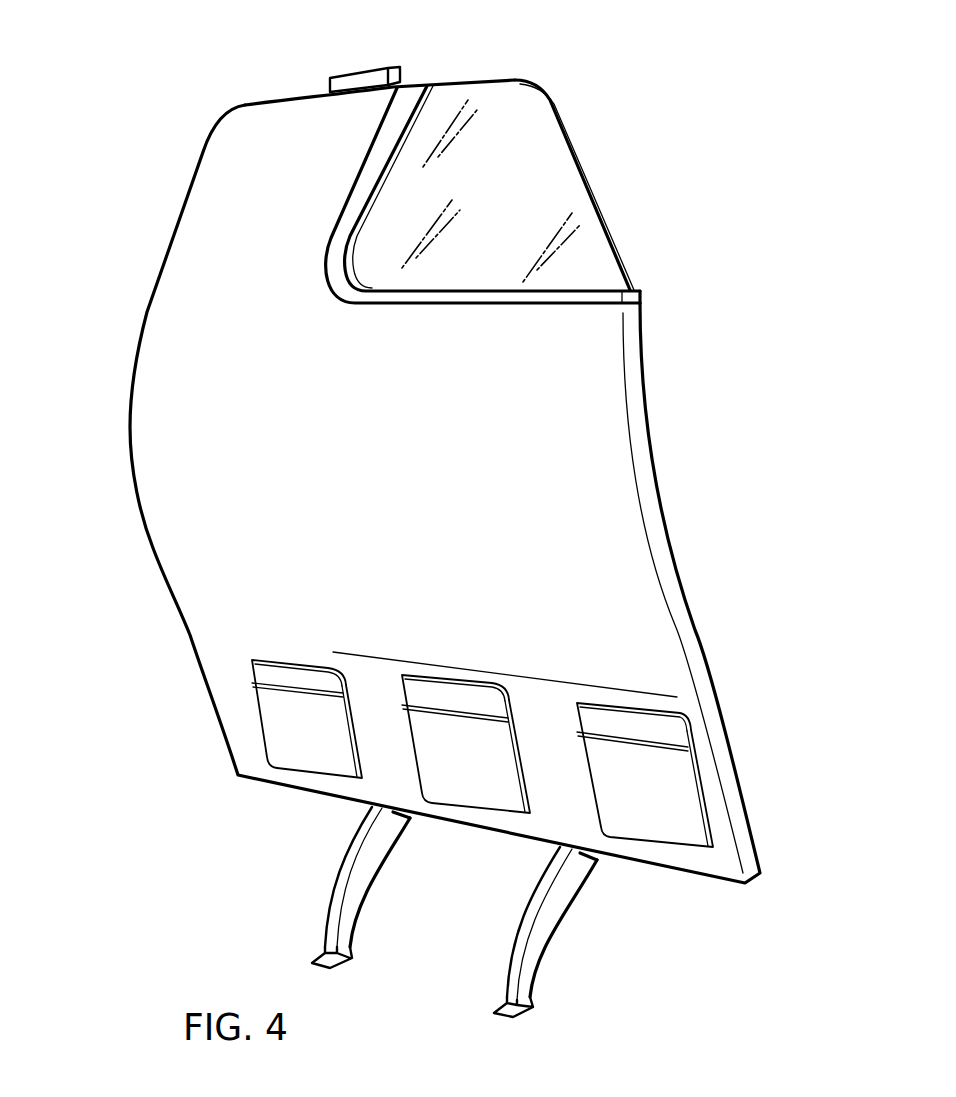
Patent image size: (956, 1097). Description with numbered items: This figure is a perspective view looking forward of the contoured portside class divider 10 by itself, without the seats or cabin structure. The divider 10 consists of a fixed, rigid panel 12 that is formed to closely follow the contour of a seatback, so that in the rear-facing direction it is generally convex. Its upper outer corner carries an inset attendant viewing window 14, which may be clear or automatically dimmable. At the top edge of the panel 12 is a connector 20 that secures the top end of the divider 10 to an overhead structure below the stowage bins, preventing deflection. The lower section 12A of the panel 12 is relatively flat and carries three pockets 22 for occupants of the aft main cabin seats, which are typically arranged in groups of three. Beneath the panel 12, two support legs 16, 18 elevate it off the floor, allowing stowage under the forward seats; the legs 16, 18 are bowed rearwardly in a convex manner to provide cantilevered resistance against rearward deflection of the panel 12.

The contoured portside class divider 10 is at (122, 272).
The panel 12 is at (158, 482).
The lower section 12A is at (733, 697).
The attendant viewing window 14 is at (530, 100).
The support leg 16 is at (530, 943).
The support leg 18 is at (333, 898).
The connector 20 is at (350, 72).
The pockets 22 is at (280, 722).